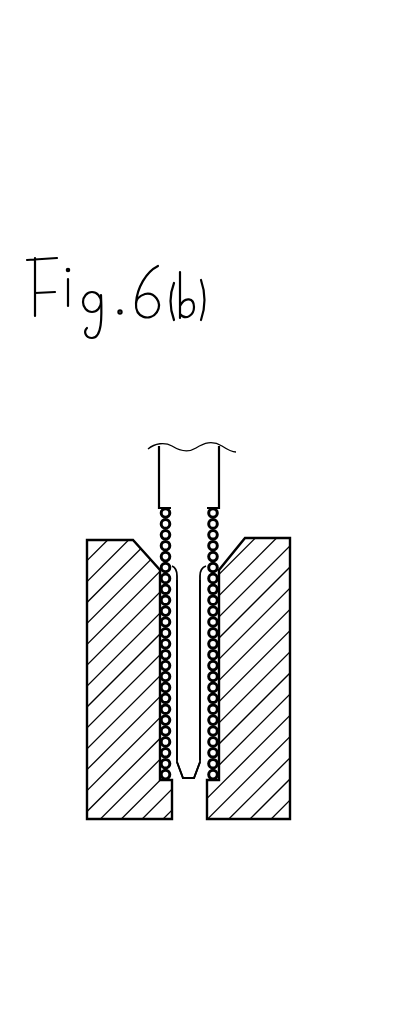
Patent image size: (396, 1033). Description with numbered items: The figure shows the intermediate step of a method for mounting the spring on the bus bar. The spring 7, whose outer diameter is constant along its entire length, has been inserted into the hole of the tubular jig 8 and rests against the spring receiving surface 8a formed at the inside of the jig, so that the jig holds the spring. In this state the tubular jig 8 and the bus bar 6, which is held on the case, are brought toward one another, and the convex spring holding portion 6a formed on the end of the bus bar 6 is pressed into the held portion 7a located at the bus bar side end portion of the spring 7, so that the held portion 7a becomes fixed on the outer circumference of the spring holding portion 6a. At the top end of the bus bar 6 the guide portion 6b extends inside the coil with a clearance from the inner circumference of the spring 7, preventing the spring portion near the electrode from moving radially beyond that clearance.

The bus bar 6 is at (208, 485).
The spring holding portion 6a is at (196, 528).
The guide portion 6b is at (188, 705).
The spring 7 is at (158, 528).
The held portion 7a is at (218, 552).
The tubular jig 8 is at (292, 705).
The spring receiving surface 8a is at (207, 781).